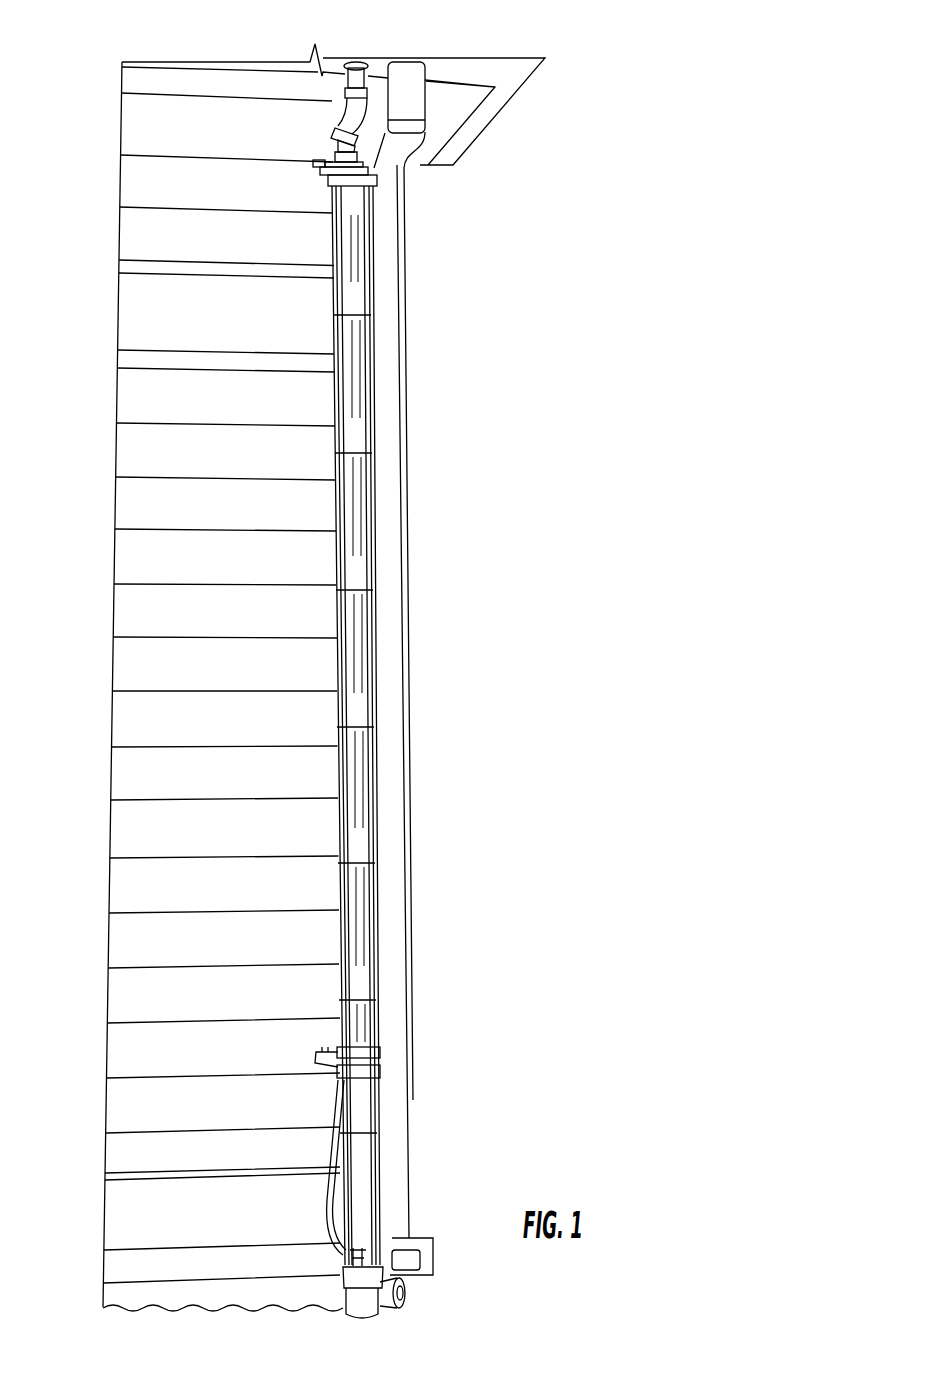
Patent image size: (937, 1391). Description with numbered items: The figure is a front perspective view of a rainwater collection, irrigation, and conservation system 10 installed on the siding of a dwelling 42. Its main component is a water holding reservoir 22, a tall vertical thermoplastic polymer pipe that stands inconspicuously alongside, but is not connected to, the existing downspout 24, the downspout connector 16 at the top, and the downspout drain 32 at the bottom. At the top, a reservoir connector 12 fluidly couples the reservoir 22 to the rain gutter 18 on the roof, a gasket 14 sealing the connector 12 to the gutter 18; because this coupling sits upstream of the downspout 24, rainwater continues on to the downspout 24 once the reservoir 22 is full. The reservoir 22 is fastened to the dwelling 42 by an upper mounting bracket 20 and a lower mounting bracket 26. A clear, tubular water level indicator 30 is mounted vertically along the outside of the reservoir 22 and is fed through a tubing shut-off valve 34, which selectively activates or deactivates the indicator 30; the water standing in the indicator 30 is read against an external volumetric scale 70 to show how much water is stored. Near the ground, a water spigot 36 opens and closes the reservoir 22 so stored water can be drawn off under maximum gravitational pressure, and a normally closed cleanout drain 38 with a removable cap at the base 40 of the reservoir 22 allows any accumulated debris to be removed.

The rainwater collection, irrigation, and conservation system 10 is at (684, 91).
The reservoir connector 12 is at (343, 112).
The gasket 14 is at (357, 66).
The downspout connector 16 is at (413, 97).
The rain gutter 18 is at (502, 73).
The upper mounting bracket 20 is at (362, 172).
The water holding reservoir 22 is at (358, 518).
The downspout 24 is at (388, 636).
The lower mounting bracket 26 is at (368, 1047).
The water level indicator 30 is at (355, 1112).
The downspout drain 32 is at (403, 1243).
The tubing shut-off valve 34 is at (343, 1257).
The water spigot 36 is at (350, 1287).
The cleanout drain 38 is at (407, 1290).
The base 40 is at (370, 1310).
The dwelling 42 is at (130, 1214).
The external volumetric scale 70 is at (378, 858).